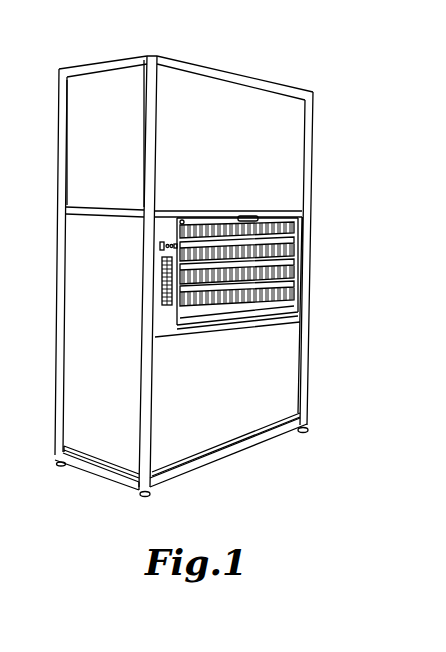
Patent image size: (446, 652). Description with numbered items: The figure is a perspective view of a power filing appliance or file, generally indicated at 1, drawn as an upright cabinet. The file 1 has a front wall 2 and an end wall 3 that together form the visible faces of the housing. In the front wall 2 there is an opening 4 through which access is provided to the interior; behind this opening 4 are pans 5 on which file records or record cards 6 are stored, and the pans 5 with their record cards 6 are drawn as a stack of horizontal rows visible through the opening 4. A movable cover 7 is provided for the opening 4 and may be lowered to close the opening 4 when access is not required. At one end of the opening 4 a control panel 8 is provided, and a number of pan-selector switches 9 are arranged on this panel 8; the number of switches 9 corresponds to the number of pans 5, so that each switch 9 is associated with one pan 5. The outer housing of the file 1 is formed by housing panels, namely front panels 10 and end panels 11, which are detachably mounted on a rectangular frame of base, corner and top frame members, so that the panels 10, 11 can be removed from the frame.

The power filing appliance 1 is at (244, 452).
The front wall 2 is at (243, 386).
The end wall 3 is at (103, 372).
The opening 4 is at (282, 306).
The pans 5 is at (292, 250).
The record cards 6 is at (266, 224).
The movable cover 7 is at (213, 220).
The control panel 8 is at (163, 300).
The pan-selector switches 9 is at (163, 282).
The front panels 10 is at (297, 120).
The end panels 11 is at (83, 123).